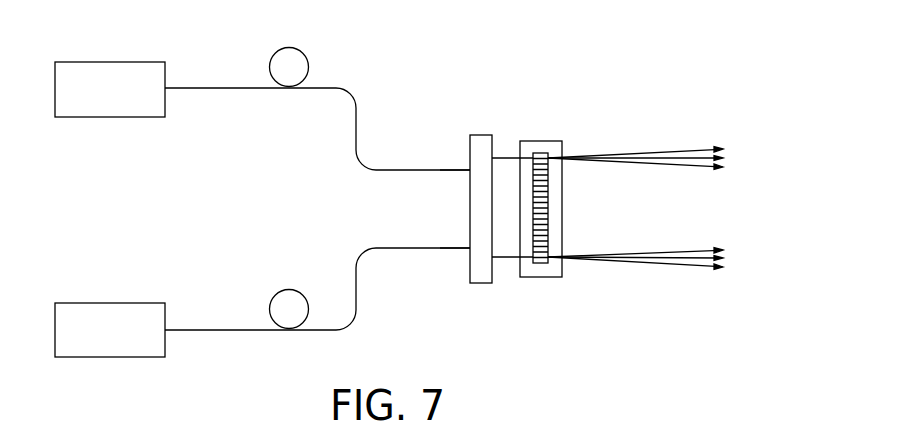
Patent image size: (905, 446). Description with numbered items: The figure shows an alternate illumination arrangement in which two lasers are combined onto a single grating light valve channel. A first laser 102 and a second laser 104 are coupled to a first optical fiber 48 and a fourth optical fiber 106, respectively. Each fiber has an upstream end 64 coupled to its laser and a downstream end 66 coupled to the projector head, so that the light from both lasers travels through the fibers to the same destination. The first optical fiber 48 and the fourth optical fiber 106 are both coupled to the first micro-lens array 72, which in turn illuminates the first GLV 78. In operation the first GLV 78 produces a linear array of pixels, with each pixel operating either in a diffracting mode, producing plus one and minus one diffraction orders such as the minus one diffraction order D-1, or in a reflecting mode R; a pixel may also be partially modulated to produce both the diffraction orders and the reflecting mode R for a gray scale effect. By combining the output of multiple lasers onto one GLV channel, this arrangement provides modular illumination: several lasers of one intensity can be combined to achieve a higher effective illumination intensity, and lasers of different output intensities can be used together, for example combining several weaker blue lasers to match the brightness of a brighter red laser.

The first laser 102 is at (131, 102).
The second laser 104 is at (131, 343).
The upstream end 64 is at (172, 85).
The first optical fiber 48 is at (293, 48).
The fourth optical fiber 106 is at (297, 290).
The downstream end 66 is at (467, 168).
The first micro-lens array 72 is at (477, 283).
The first GLV 78 is at (533, 277).
The reflecting mode R is at (638, 158).
The minus one diffraction order D-1 is at (632, 300).